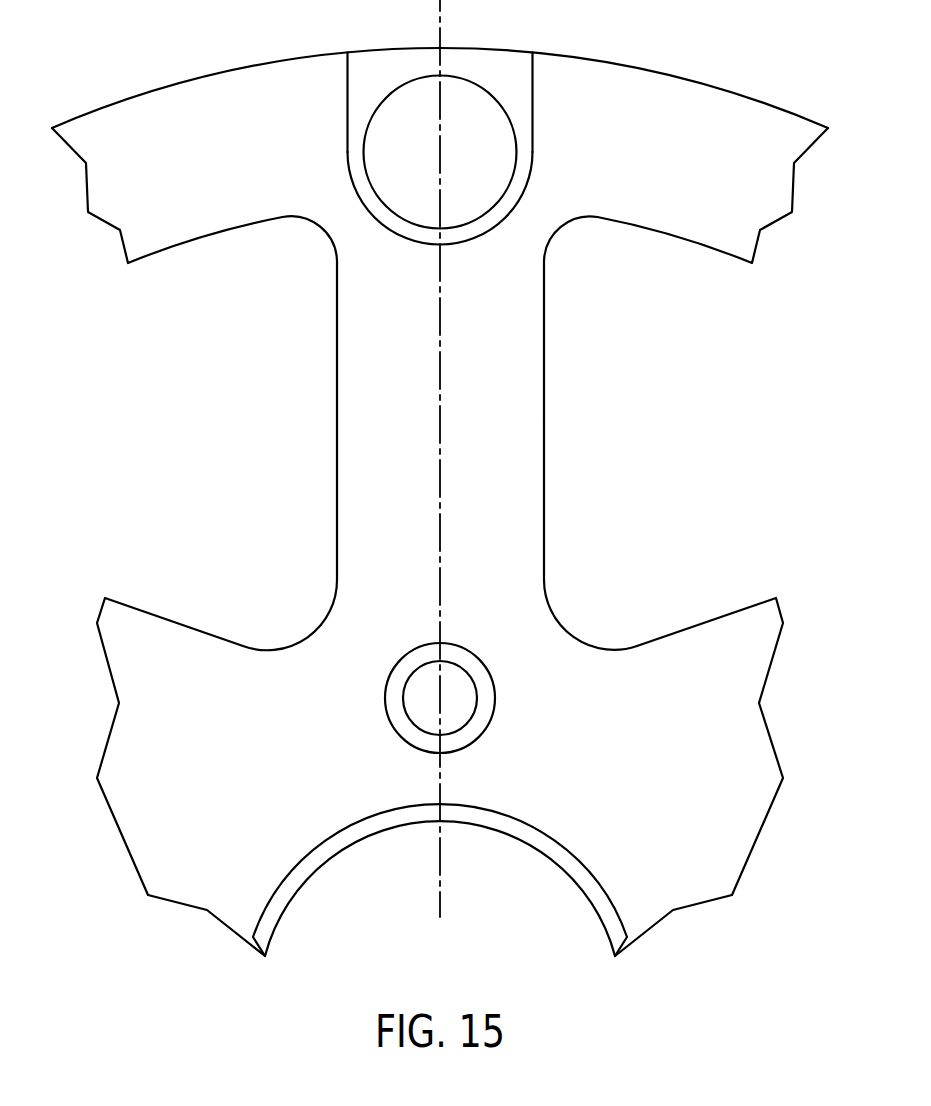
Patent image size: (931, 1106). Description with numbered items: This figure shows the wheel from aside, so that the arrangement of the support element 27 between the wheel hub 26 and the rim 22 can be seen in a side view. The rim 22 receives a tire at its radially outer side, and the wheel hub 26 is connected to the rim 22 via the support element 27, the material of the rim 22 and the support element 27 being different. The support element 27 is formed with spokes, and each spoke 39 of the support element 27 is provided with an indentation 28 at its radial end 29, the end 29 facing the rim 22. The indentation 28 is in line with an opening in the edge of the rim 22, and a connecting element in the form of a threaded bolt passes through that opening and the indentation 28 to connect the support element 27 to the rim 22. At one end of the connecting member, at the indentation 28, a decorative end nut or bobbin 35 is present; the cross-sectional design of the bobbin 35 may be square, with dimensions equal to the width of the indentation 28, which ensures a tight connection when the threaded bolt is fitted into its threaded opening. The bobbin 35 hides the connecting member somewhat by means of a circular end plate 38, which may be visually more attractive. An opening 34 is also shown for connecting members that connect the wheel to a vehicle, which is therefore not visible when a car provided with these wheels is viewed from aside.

The rim 22 is at (283, 60).
The wheel hub 26 is at (530, 928).
The support element 27 is at (522, 326).
The indentation 28 is at (500, 67).
The end 29 is at (366, 55).
The opening 34 is at (477, 713).
The bobbin 35 is at (517, 155).
The circular end plate 38 is at (380, 153).
The spoke 39 is at (522, 480).